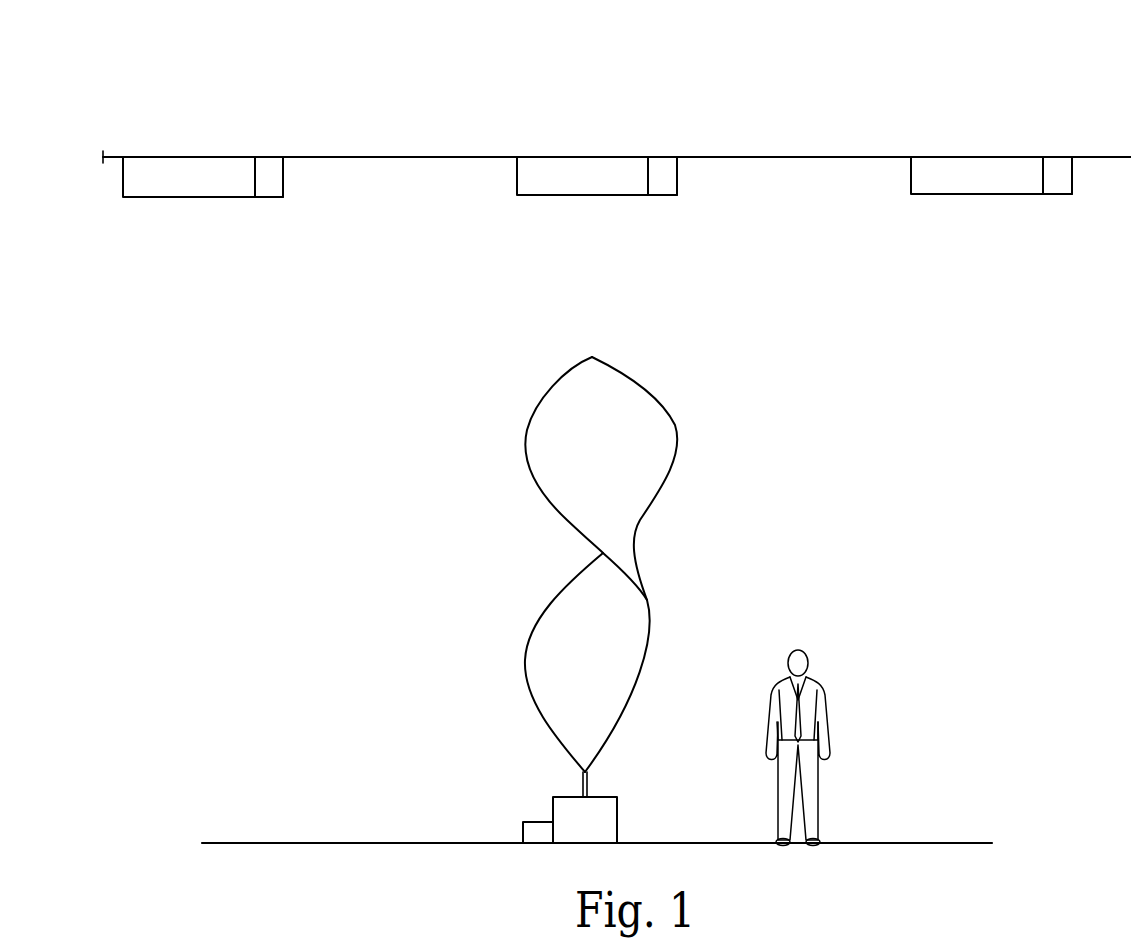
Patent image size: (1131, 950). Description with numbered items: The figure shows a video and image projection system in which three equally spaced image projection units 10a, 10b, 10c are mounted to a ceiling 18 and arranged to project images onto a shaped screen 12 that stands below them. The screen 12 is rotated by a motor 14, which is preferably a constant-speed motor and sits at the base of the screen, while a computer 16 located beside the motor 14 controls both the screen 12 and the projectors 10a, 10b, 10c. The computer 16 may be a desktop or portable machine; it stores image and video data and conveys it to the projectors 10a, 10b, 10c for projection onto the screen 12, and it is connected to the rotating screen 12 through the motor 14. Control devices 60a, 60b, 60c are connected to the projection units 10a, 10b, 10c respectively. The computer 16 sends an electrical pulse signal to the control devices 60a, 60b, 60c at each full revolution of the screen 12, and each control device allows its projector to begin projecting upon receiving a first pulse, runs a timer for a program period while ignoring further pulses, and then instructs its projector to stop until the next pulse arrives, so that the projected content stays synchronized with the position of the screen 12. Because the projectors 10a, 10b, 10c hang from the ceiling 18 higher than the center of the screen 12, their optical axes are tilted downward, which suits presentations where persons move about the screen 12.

The image projection unit 10a is at (203, 177).
The image projection unit 10b is at (597, 176).
The image projection unit 10c is at (1032, 113).
The shaped screen 12 is at (662, 455).
The motor 14 is at (618, 812).
The computer 16 is at (520, 832).
The ceiling 18 is at (347, 155).
The control device 60a is at (270, 197).
The control device 60b is at (663, 196).
The control device 60c is at (1053, 195).